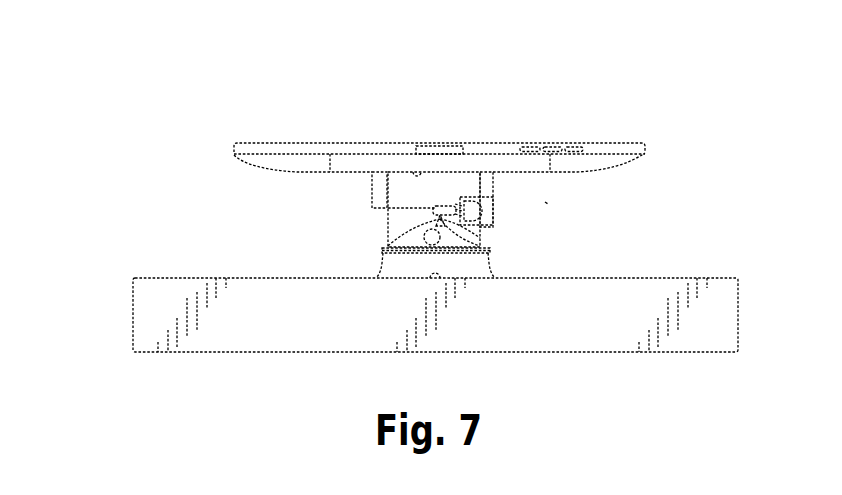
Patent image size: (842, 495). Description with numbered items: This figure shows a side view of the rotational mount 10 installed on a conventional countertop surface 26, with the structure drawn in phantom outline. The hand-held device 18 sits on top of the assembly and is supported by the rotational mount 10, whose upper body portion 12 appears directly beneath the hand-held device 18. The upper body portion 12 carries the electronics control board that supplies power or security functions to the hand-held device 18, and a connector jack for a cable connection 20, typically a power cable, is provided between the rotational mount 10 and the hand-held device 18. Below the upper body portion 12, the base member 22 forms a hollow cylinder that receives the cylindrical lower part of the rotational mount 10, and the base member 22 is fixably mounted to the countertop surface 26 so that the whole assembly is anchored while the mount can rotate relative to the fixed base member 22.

The rotational mount 10 is at (542, 203).
The upper body portion 12 is at (400, 223).
The hand-held device 18 is at (557, 142).
The connector jack connection 20 is at (480, 240).
The base member 22 is at (375, 265).
The countertop surface 26 is at (147, 301).